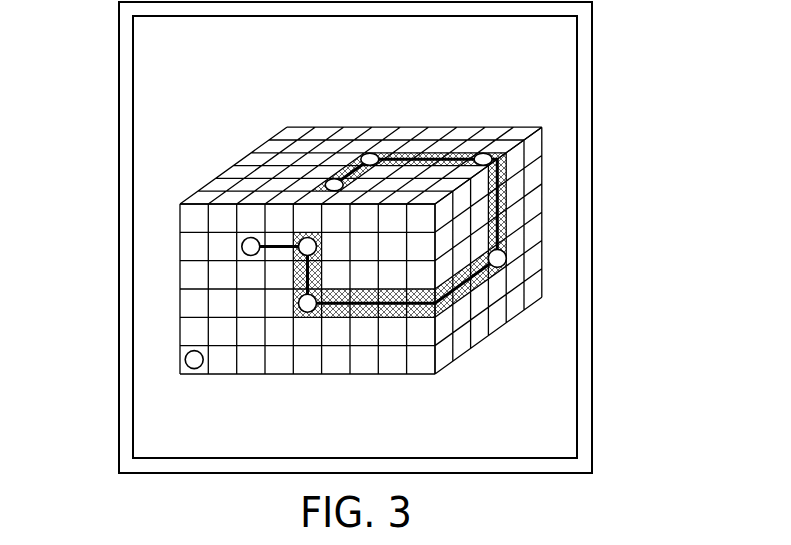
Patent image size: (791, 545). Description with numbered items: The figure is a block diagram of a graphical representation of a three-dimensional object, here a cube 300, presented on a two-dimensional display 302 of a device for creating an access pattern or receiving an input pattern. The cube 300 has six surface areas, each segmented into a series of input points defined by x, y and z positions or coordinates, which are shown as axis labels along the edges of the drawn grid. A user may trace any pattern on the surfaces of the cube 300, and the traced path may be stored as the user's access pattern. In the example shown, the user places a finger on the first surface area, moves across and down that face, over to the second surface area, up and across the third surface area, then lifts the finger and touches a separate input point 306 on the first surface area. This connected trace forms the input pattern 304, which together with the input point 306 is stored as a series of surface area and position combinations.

The three-dimensional object 300 is at (383, 243).
The two-dimensional display 302 is at (593, 55).
The input pattern 304 is at (477, 270).
The input point 306 is at (186, 370).